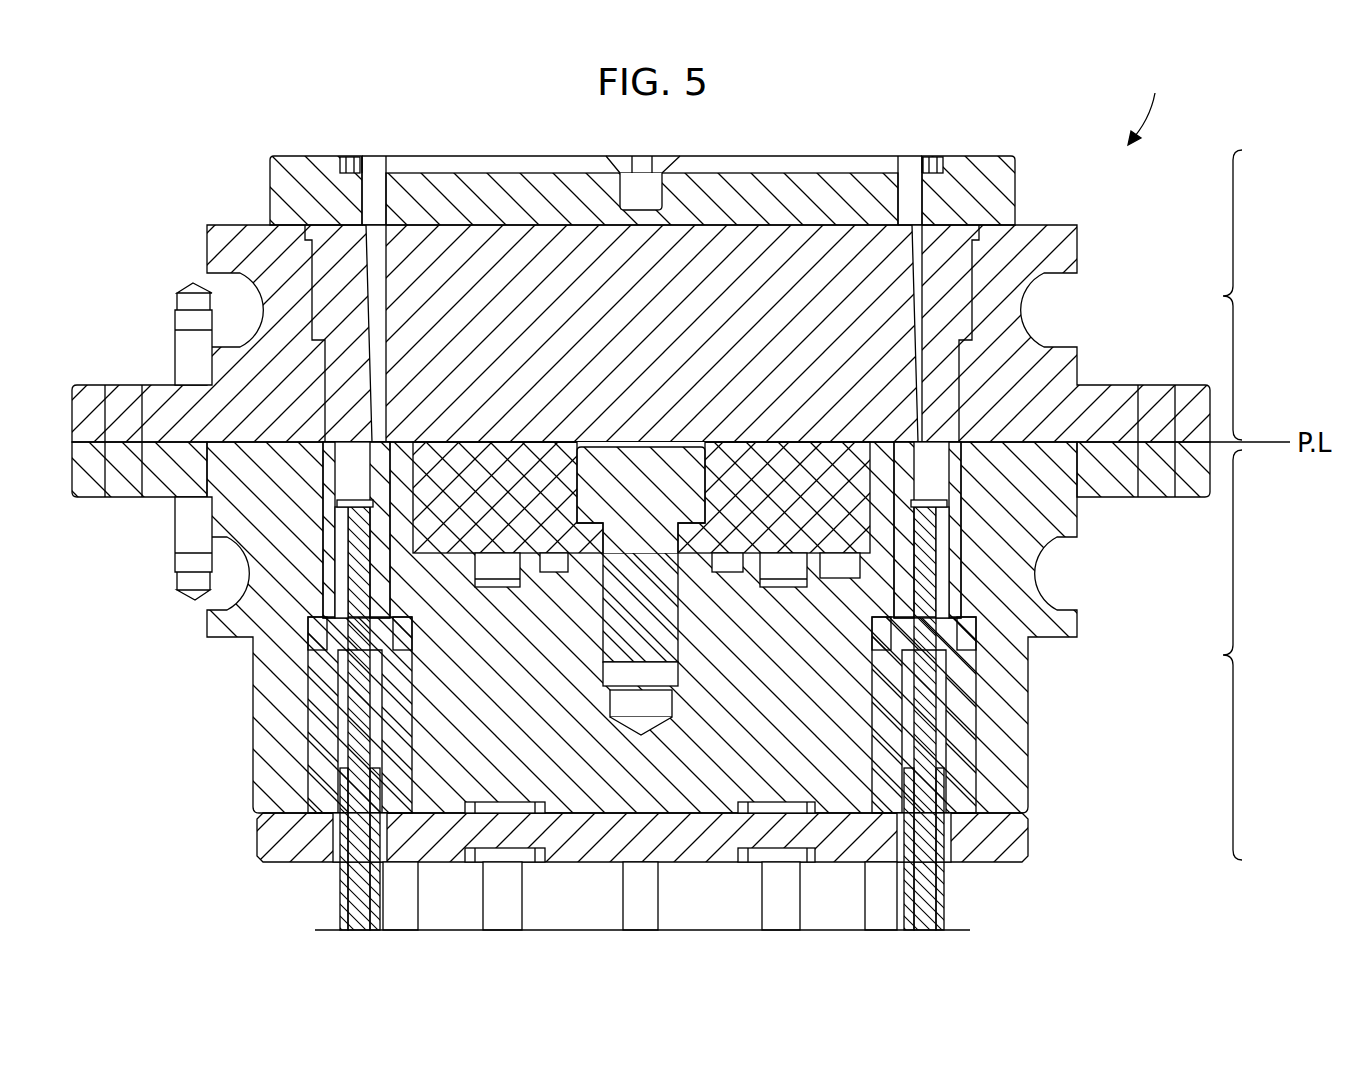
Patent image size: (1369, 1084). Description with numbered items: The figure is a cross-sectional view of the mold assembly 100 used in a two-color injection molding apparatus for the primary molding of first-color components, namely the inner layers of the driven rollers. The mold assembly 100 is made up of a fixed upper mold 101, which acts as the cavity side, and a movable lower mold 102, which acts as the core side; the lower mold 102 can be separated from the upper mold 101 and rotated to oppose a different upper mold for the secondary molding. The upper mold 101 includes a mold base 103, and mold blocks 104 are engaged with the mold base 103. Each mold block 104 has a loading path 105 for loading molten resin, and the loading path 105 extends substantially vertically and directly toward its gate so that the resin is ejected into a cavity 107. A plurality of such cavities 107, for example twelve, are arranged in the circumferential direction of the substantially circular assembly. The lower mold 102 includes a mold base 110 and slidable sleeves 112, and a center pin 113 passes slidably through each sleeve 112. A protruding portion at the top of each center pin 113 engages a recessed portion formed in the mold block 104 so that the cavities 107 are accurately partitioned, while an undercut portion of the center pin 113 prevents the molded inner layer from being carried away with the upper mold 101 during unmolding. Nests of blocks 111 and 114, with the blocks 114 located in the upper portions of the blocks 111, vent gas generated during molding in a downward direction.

The mold assembly 100 is at (1176, 86).
The fixed upper mold 101 is at (1260, 295).
The movable lower mold 102 is at (1260, 655).
The mold base 103 is at (1035, 365).
The mold block 104 is at (328, 272).
The loading path 105 is at (370, 205).
The cavity 107 is at (340, 533).
The mold base 110 is at (1020, 565).
The block 111 is at (318, 722).
The slidable sleeve 112 is at (342, 885).
The center pin 113 is at (357, 672).
The block 114 is at (318, 632).